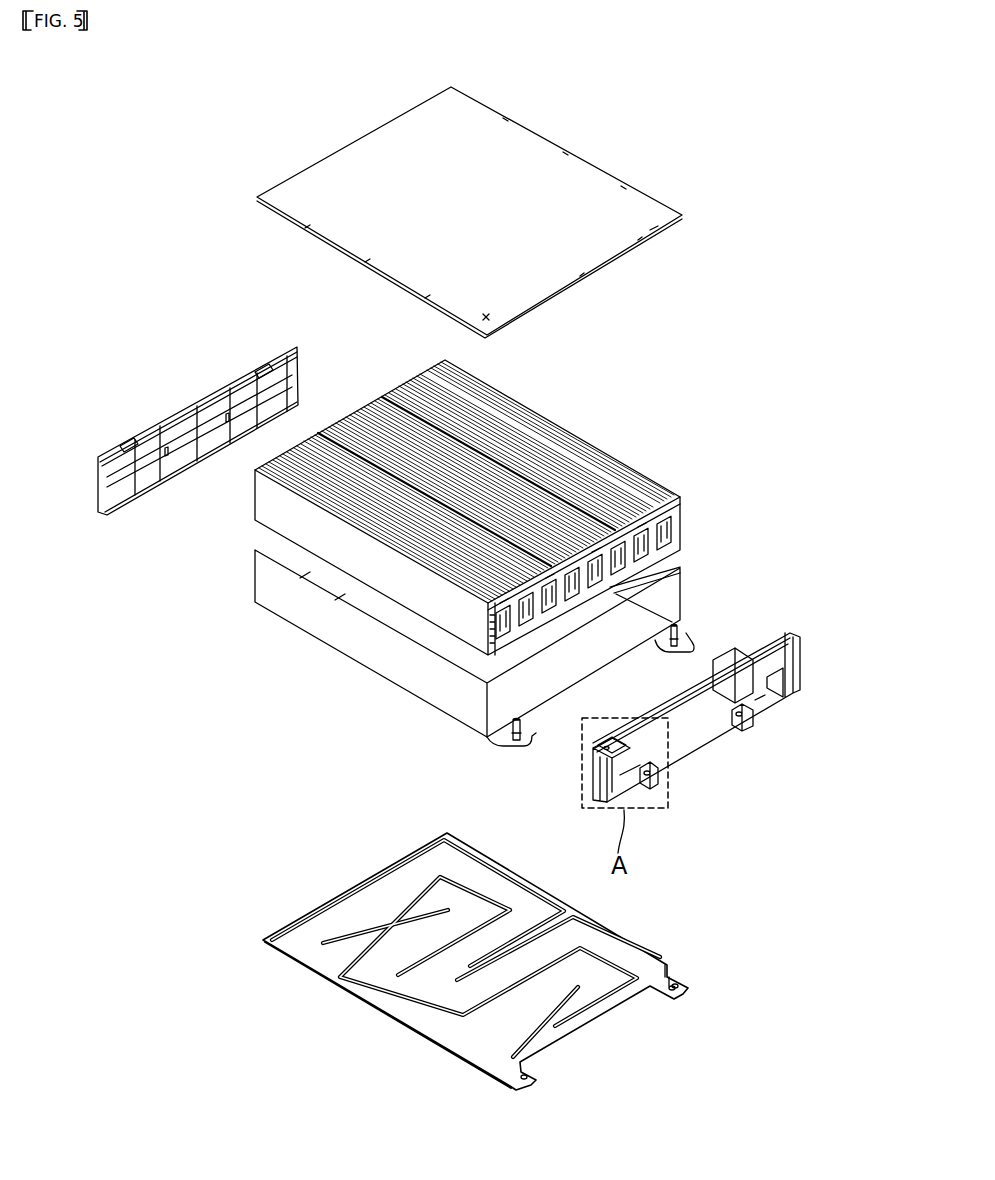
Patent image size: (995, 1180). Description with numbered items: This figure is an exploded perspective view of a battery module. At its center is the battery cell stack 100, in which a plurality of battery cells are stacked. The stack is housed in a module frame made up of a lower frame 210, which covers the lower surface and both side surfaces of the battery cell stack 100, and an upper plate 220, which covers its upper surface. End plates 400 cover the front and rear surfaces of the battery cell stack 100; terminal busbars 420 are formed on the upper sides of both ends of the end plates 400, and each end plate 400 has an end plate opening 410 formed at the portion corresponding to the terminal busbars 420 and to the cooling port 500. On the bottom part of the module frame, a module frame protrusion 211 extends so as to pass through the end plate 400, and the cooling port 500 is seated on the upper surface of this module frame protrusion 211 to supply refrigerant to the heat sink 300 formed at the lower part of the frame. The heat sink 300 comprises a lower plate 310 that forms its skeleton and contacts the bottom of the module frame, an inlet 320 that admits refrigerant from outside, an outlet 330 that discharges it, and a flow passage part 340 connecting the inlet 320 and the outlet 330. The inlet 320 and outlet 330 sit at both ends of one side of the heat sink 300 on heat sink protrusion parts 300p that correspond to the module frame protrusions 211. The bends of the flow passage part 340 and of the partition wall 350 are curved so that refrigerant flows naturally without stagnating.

The battery cell stack 100 is at (600, 440).
The lower frame 210 is at (366, 655).
The module frame protrusion 211 is at (497, 741).
The upper plate 220 is at (582, 180).
The heat sink 300 is at (509, 960).
The heat sink protrusion part 300p is at (690, 990).
The lower plate 310 is at (330, 985).
The inlet 320 is at (670, 965).
The outlet 330 is at (512, 1074).
The flow passage part 340 is at (575, 1012).
The partition wall 350 is at (413, 1003).
The end plate 400 is at (200, 405).
The end plate opening 410 is at (641, 773).
The terminal busbar 420 is at (606, 733).
The cooling port 500 is at (524, 755).